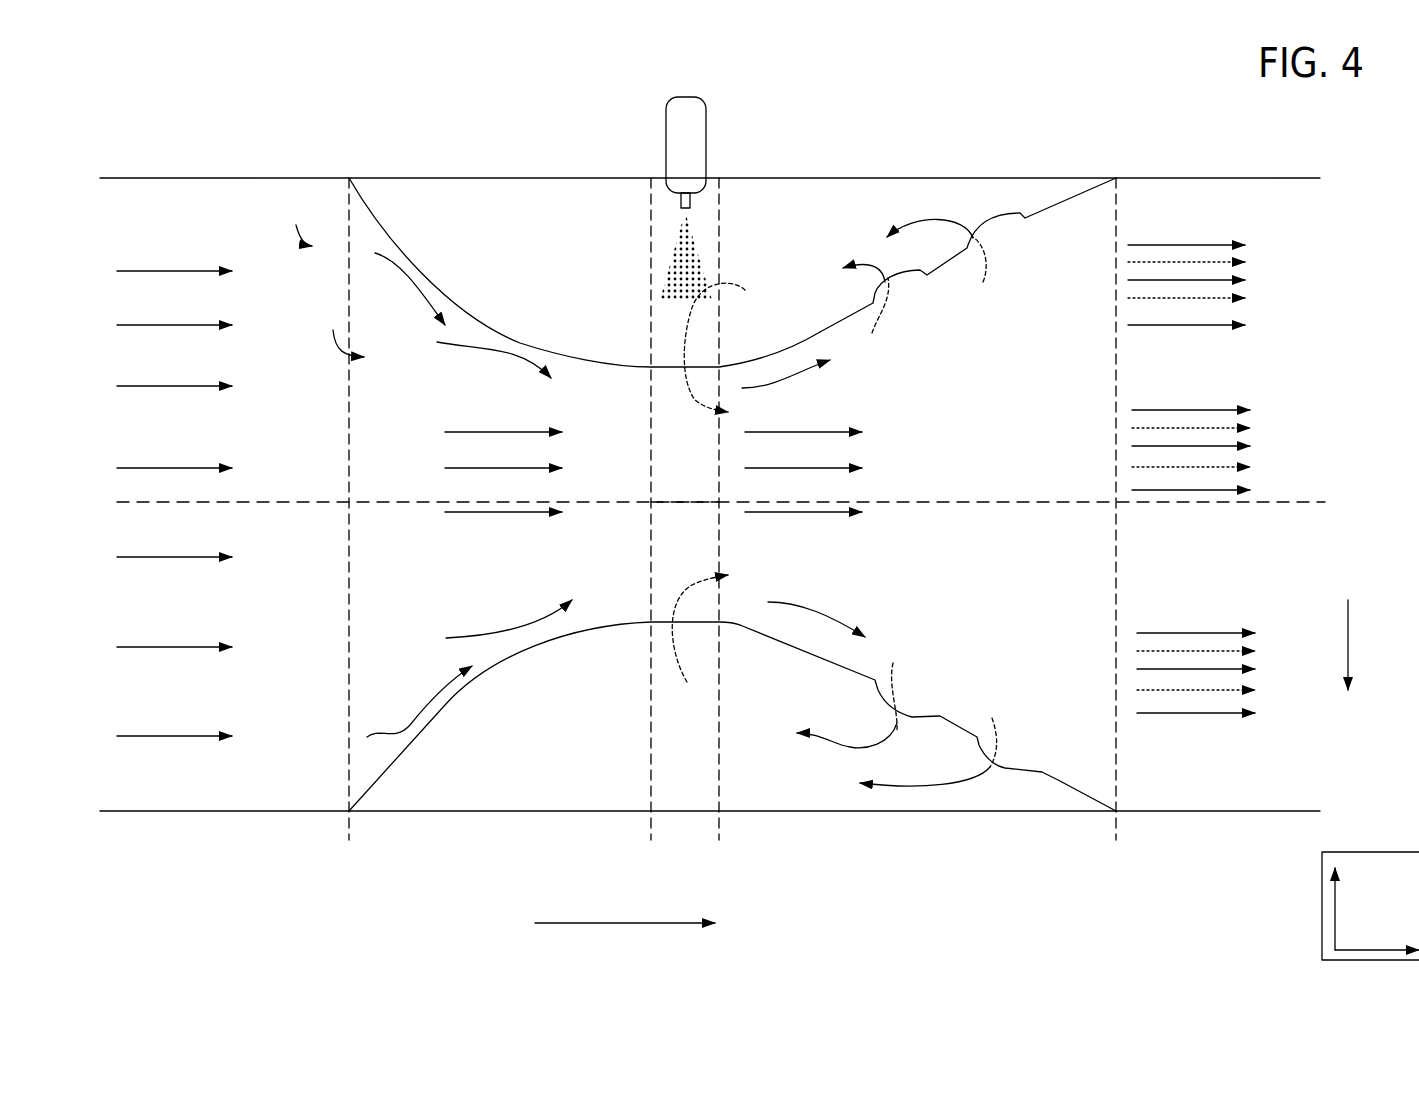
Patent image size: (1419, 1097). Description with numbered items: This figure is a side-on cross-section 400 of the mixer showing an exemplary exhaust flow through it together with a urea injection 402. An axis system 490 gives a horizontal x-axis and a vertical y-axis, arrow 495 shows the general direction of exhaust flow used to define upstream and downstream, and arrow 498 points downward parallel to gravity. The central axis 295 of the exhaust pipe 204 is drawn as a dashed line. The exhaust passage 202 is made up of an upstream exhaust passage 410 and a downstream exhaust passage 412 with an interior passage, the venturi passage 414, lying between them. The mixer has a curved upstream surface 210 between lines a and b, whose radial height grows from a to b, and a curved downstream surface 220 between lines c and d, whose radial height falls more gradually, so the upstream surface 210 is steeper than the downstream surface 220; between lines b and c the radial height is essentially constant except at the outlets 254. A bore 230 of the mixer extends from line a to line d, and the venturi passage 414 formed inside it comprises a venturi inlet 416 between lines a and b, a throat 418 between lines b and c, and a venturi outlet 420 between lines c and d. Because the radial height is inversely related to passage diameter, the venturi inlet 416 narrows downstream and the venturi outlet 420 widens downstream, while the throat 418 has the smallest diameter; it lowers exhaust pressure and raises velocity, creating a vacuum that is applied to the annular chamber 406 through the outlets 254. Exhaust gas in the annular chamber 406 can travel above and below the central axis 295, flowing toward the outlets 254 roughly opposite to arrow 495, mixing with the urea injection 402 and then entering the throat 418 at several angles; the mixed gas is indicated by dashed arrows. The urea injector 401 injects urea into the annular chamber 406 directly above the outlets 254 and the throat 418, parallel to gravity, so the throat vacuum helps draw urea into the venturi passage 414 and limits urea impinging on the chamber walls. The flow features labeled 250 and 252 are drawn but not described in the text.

The side-on cross-section 400 is at (1270, 148).
The exhaust passage 202 is at (1320, 231).
The exhaust pipe 204 is at (160, 178).
The curved upstream surface 210 is at (470, 314).
The downstream surface 220 is at (1066, 197).
The bore 230 is at (296, 223).
The vortex generator 250 is at (902, 275).
The vortex generator 252 is at (1000, 210).
The outlets 254 is at (706, 367).
The central axis 295 is at (1293, 502).
The urea injector 401 is at (705, 153).
The urea injection 402 is at (694, 250).
The annular chamber 406 is at (548, 232).
The upstream exhaust passage 410 is at (285, 446).
The downstream exhaust passage 412 is at (1259, 564).
The venturi passage 414 is at (338, 332).
The venturi inlet 416 is at (516, 574).
The throat 418 is at (705, 569).
The venturi outlet 420 is at (833, 569).
The axis system 490 is at (1352, 852).
The arrow 495 is at (635, 909).
The arrow 498 is at (1348, 633).